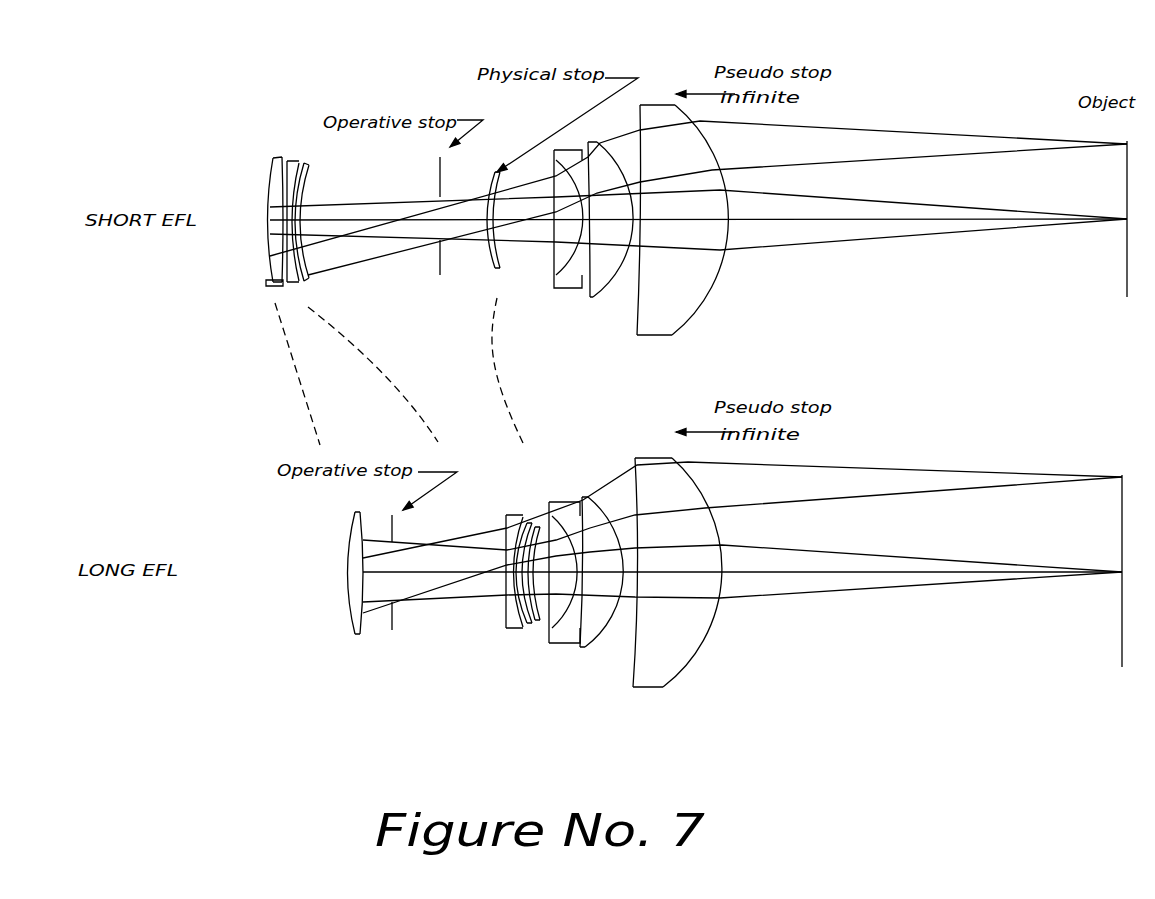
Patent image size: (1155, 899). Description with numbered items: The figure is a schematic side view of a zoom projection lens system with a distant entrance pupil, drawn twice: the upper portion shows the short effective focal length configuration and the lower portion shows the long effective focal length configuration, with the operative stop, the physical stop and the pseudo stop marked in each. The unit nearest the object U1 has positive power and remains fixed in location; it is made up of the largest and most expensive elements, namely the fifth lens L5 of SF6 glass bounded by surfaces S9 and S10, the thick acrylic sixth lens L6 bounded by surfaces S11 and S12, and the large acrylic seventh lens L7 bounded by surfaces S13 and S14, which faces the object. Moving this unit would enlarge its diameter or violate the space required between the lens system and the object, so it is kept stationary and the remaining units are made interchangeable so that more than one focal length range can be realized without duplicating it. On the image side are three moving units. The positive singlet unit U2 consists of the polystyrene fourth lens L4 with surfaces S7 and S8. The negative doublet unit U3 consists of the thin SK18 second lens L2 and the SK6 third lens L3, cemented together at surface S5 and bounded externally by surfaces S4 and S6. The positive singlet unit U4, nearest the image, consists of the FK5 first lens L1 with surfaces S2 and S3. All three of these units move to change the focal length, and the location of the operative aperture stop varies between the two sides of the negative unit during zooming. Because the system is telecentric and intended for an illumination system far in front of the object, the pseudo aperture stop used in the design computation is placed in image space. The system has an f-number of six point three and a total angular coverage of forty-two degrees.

The lens unit nearest the object U1 is at (552, 125).
The positive singlet unit U2 is at (508, 167).
The negative doublet unit U3 is at (313, 150).
The positive singlet unit U4 is at (282, 147).
The first lens L1 is at (351, 583).
The second lens L2 is at (505, 533).
The third lens L3 is at (532, 523).
The fourth lens L4 is at (527, 557).
The fifth lens L5 is at (581, 503).
The sixth lens L6 is at (584, 498).
The seventh lens L7 is at (672, 459).
The surface two S2 is at (352, 626).
The surface three S3 is at (360, 624).
The surface four S4 is at (503, 603).
The surface five S5 is at (516, 616).
The surface six S6 is at (522, 622).
The surface seven S7 is at (528, 626).
The surface eight S8 is at (536, 622).
The surface nine S9 is at (540, 624).
The surface ten S10 is at (556, 640).
The surface eleven S11 is at (586, 653).
The surface twelve S12 is at (600, 642).
The surface thirteen S13 is at (637, 658).
The surface fourteen S14 is at (690, 665).